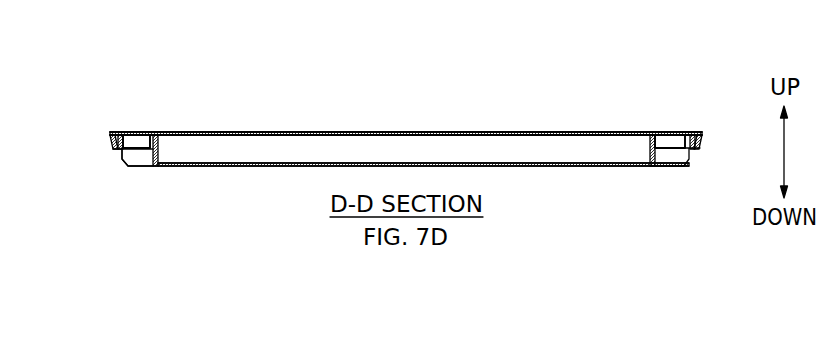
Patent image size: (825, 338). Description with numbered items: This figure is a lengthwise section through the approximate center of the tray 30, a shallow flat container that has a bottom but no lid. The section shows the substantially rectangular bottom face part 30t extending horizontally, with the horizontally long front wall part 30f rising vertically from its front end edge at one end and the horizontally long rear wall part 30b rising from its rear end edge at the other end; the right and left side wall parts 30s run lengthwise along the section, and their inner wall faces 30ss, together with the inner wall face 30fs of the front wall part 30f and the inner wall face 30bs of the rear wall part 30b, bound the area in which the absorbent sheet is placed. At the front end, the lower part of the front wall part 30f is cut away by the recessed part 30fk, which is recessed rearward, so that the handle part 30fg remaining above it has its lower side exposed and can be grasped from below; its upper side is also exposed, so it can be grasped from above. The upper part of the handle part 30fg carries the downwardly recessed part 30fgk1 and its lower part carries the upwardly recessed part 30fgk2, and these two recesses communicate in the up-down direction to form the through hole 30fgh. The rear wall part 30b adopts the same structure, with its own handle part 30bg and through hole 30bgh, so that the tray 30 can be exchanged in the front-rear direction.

The tray 30 is at (530, 104).
The side wall part 30s is at (406, 133).
The inner wall face of side wall part 30ss is at (400, 148).
The bottom face part 30t is at (448, 156).
The front wall part 30f is at (126, 120).
The handle part 30fg is at (109, 120).
The recessed part 30fgk1 is at (149, 121).
The recessed part 30fgk2 is at (141, 160).
The through hole 30fgh is at (404, 141).
The inner wall face of front wall part 30fs is at (172, 138).
The recessed part 30fk is at (120, 157).
The rear wall part 30b is at (686, 120).
The handle part 30bg is at (702, 120).
The through hole 30bgh is at (663, 124).
The inner wall face of rear wall part 30bs is at (640, 135).